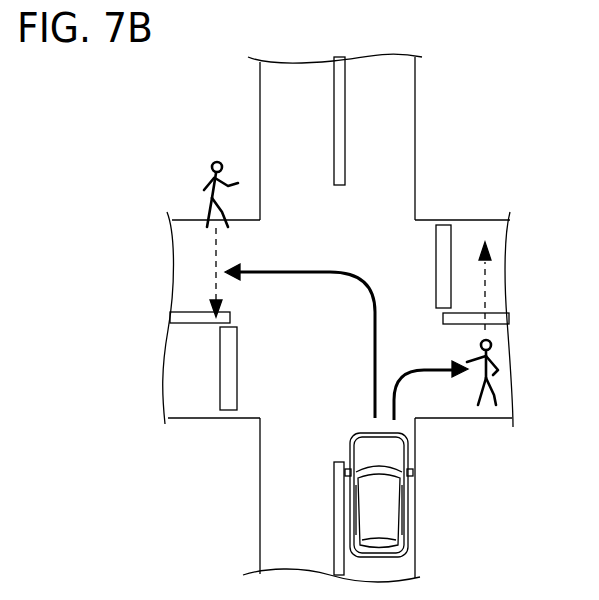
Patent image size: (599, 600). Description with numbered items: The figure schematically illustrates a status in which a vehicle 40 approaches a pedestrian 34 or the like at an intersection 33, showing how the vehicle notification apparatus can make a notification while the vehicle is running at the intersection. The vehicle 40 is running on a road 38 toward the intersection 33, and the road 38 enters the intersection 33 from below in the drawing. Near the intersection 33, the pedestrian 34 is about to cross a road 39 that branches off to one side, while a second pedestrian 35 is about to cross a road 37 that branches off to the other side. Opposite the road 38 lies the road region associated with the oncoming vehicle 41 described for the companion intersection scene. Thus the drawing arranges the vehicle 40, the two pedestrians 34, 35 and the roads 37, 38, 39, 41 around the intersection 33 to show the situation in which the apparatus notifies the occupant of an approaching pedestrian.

The intersection 33 is at (363, 258).
The pedestrian 34 is at (502, 363).
The pedestrian 35 is at (210, 177).
The road 37 is at (172, 218).
The road 38 is at (418, 543).
The road 39 is at (488, 420).
The vehicle 40 is at (403, 490).
The vehicle 41 is at (260, 79).